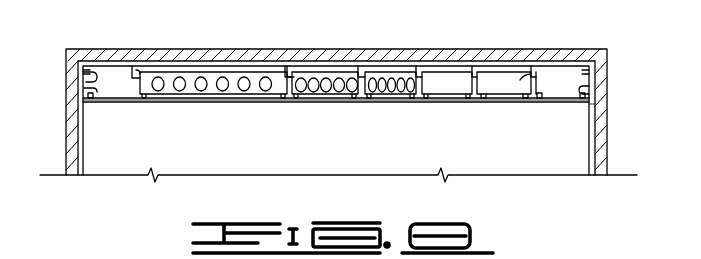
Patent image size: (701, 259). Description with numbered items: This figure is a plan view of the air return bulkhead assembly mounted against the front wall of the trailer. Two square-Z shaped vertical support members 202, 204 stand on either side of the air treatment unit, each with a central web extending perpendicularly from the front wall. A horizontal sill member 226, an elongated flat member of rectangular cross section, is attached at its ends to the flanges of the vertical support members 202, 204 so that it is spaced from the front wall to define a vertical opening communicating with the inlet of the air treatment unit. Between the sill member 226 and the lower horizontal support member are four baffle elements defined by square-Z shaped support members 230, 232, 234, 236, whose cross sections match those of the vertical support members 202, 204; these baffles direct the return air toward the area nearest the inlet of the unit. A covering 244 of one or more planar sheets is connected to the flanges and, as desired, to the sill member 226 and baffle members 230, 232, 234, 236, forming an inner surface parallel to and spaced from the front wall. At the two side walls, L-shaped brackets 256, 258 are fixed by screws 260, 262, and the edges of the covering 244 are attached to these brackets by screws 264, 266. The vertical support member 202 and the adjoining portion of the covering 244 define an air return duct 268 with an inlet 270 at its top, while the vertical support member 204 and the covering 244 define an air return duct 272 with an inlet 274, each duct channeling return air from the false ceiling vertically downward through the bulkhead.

The vertical support member 202 is at (138, 78).
The vertical support member 204 is at (521, 76).
The horizontal sill member 226 is at (337, 100).
The baffle support member 230 is at (256, 73).
The baffle support member 232 is at (332, 72).
The baffle support member 234 is at (398, 72).
The baffle support member 236 is at (488, 73).
The covering 244 is at (130, 100).
The right-angle bracket 256 is at (83, 75).
The right-angle bracket 258 is at (590, 72).
The screws 260 is at (82, 92).
The screws 262 is at (589, 93).
The screws 264 is at (78, 122).
The screws 266 is at (594, 109).
The air return duct 268 is at (117, 87).
The inlet 270 is at (100, 58).
The air return duct 272 is at (557, 88).
The inlet 274 is at (568, 62).